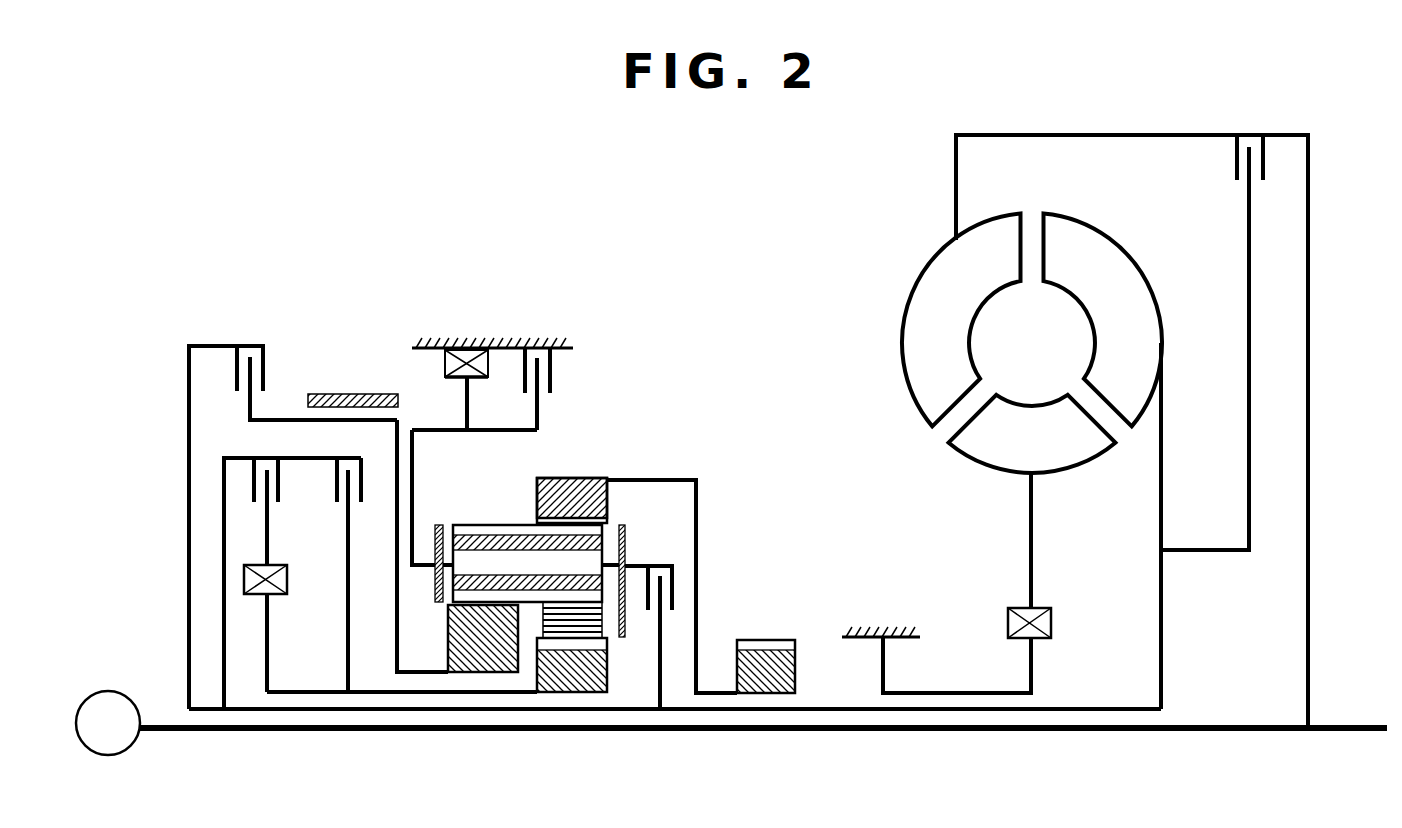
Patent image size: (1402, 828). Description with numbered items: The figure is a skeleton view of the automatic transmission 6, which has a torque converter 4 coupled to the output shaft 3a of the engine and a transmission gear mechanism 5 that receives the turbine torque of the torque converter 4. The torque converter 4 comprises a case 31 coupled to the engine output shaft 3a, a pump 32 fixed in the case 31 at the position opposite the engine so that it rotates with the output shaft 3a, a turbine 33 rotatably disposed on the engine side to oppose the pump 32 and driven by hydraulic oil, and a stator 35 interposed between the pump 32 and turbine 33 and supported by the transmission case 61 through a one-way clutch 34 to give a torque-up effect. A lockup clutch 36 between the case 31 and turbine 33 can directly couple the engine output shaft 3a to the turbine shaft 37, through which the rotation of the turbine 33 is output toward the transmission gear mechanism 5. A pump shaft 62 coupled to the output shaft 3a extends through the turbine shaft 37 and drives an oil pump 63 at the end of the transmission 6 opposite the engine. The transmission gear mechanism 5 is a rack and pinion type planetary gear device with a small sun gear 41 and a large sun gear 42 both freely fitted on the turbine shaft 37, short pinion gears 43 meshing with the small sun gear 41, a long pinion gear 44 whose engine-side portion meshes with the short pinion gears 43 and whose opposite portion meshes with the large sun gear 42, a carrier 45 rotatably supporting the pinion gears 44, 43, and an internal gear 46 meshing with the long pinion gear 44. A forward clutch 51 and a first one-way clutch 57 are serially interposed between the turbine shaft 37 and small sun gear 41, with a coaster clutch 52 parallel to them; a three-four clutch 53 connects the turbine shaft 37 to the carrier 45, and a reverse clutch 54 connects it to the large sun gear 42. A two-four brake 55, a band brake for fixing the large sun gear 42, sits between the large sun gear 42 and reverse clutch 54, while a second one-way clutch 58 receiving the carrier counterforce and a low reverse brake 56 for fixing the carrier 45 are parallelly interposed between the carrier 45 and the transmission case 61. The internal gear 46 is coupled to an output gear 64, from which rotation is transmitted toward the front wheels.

The output shaft 3a is at (1345, 725).
The torque converter 4 is at (1023, 390).
The transmission gear mechanism 5 is at (676, 473).
The automatic transmission 6 is at (1159, 408).
The case 31 is at (1103, 133).
The pump 32 is at (920, 288).
The turbine 33 is at (1145, 293).
The one-way clutch 34 is at (1052, 614).
The stator 35 is at (985, 458).
The lockup clutch 36 is at (1237, 170).
The turbine shaft 37 is at (821, 707).
The small sun gear 41 is at (600, 675).
The large sun gear 42 is at (448, 650).
The short pinion gear 43 is at (600, 625).
The long pinion gear 44 is at (471, 525).
The carrier 45 is at (624, 530).
The internal gear 46 is at (579, 478).
The forward clutch 51 is at (268, 458).
The coaster clutch 52 is at (346, 458).
The 3-4 clutch 53 is at (656, 566).
The reverse clutch 54 is at (266, 374).
The 2-4 brake 55 is at (352, 394).
The low reverse brake 56 is at (552, 378).
The first one-way clutch 57 is at (287, 567).
The second one-way clutch 58 is at (481, 369).
The transmission case 61 is at (483, 340).
The pump shaft 62 is at (245, 733).
The oil pump 63 is at (128, 695).
The output gear 64 is at (770, 640).